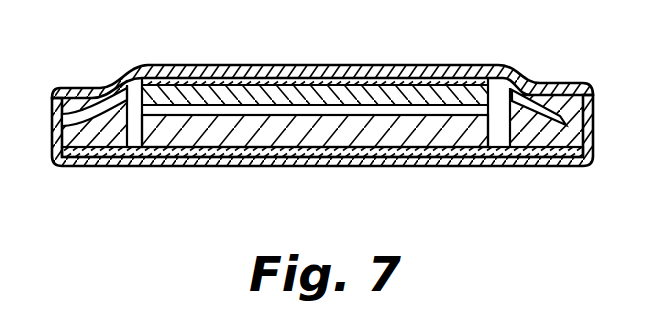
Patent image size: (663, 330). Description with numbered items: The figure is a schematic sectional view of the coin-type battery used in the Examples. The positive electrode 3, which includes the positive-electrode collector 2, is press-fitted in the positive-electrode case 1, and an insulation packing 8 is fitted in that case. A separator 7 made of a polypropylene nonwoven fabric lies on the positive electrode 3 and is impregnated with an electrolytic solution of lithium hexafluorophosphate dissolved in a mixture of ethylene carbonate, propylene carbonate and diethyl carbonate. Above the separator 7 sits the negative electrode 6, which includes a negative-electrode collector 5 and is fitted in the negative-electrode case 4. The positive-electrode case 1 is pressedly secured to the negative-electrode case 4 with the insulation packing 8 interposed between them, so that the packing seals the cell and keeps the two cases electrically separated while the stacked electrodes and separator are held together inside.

The positive-electrode case 1 is at (230, 166).
The positive-electrode collector 2 is at (288, 150).
The positive electrode 3 is at (362, 132).
The negative-electrode case 4 is at (227, 70).
The negative-electrode collector 5 is at (322, 78).
The negative electrode 6 is at (360, 93).
The separator 7 is at (438, 110).
The insulation packing 8 is at (556, 97).